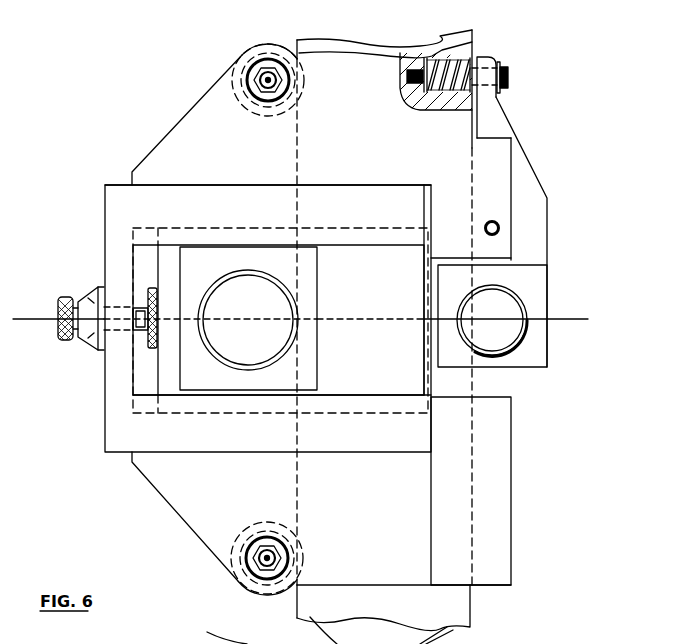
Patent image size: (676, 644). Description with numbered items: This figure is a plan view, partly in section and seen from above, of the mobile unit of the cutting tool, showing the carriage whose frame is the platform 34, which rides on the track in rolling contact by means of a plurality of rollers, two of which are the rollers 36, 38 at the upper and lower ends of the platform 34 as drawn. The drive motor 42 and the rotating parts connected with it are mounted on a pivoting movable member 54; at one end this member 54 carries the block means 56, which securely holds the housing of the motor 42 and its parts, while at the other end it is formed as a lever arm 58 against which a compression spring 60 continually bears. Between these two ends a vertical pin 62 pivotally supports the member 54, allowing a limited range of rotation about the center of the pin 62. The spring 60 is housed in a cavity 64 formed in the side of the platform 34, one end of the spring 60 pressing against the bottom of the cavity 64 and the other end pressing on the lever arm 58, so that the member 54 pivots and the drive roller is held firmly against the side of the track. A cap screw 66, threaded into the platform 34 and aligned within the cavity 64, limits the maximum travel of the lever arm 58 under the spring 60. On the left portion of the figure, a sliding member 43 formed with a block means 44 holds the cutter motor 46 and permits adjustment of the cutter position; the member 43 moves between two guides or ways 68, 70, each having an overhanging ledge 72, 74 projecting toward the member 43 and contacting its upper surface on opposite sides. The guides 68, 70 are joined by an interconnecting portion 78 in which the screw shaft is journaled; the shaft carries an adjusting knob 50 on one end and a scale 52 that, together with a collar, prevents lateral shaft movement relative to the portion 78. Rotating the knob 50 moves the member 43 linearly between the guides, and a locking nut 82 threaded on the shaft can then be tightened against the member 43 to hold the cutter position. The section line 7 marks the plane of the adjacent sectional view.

The section line 7- 7 is at (25, 327).
The platform 34 is at (359, 337).
The roller 36 is at (248, 58).
The roller 38 is at (233, 568).
The drive motor 42 is at (492, 320).
The sliding member 43 is at (370, 307).
The block means 44 is at (305, 362).
The motor 46 is at (233, 345).
The adjusting knob 50 is at (66, 297).
The scale 52 is at (98, 287).
The movable member 54 is at (533, 255).
The block means 56 is at (537, 358).
The lever arm 58 is at (487, 127).
The spring 60 is at (470, 60).
The vertical pin 62 is at (498, 227).
The cavity 64 is at (442, 108).
The cap screw 66 is at (509, 76).
The guide 68 is at (255, 197).
The guide 70 is at (342, 452).
The overhanging ledge 72 is at (408, 240).
The overhanging ledge 74 is at (370, 397).
The interconnecting portion 78 is at (112, 220).
The locking nut 82 is at (157, 293).